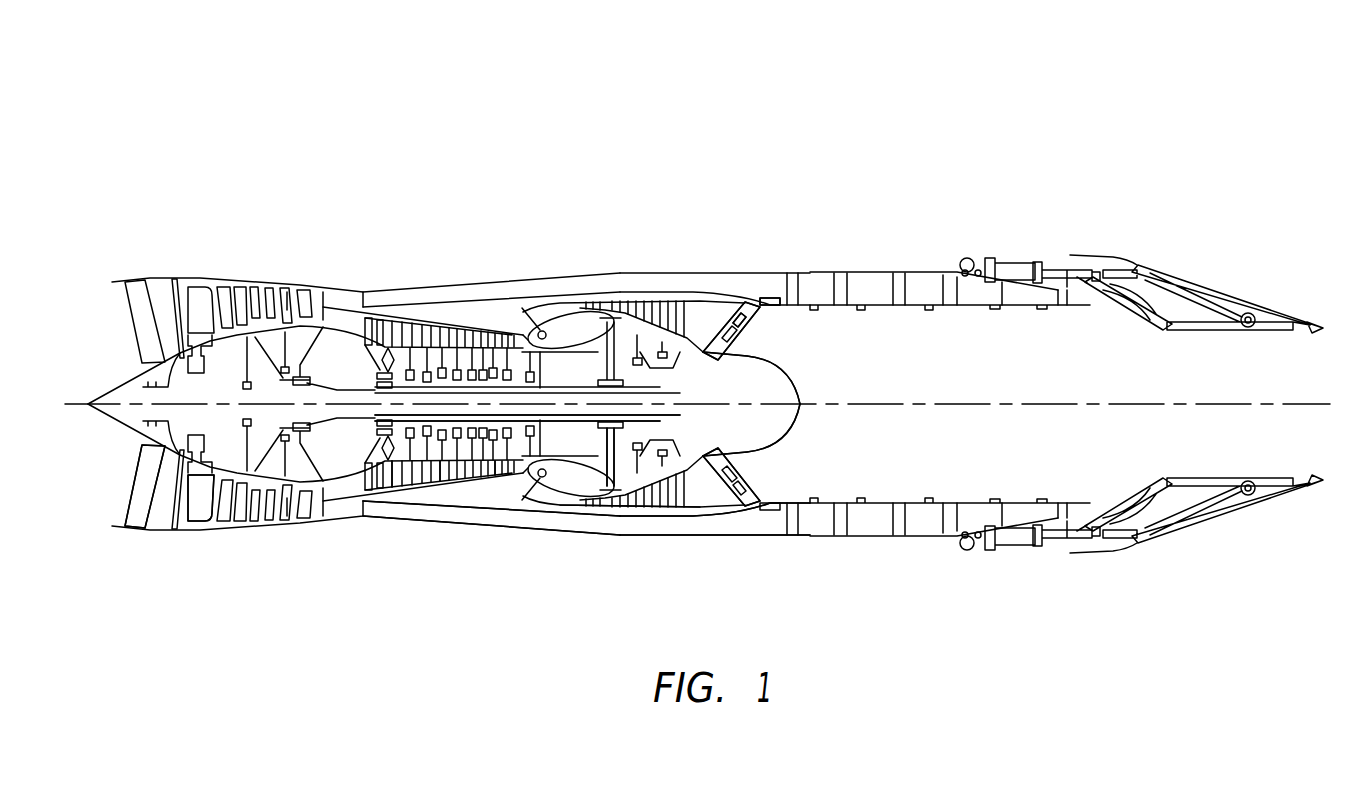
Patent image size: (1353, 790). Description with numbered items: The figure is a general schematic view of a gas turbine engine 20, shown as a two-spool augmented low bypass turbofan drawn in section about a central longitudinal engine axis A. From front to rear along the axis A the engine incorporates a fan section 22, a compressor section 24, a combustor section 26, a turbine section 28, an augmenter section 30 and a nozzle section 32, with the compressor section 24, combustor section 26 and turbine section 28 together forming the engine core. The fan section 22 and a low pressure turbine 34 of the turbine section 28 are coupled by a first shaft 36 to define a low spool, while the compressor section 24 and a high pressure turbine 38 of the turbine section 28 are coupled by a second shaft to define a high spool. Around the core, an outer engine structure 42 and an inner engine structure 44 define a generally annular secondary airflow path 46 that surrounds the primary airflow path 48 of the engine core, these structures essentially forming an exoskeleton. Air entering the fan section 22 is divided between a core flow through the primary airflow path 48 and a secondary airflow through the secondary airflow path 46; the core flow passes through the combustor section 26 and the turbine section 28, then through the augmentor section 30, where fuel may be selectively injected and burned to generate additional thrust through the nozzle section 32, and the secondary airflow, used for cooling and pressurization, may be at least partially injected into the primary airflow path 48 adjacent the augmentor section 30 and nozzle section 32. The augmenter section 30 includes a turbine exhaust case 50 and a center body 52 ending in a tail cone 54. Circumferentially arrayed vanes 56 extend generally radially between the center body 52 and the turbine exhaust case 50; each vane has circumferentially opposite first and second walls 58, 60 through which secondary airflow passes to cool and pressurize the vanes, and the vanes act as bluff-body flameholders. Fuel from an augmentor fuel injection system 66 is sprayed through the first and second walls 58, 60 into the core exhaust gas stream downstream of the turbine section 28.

The gas turbine engine 20 is at (985, 106).
The fan section 22 is at (112, 212).
The compressor section 24 is at (535, 212).
The combustor section 26 is at (605, 212).
The turbine section 28 is at (682, 212).
The augmenter section 30 is at (682, 212).
The nozzle section 32 is at (1323, 212).
The low pressure turbine 34 is at (648, 510).
The first shaft 36 is at (333, 423).
The high pressure turbine 38 is at (608, 500).
The outer engine structure 42 is at (346, 520).
The inner engine structure 44 is at (448, 490).
The secondary airflow path 46 is at (396, 512).
The primary airflow path 48 is at (322, 498).
The turbine exhaust case 50 is at (690, 540).
The center body 52 is at (752, 450).
The tail cone 54 is at (798, 400).
The vanes 56 is at (752, 333).
The first wall 58 is at (706, 498).
The second wall 60 is at (740, 480).
The augmentor fuel injection system 66 is at (739, 314).
The central longitudinal engine axis A is at (1080, 408).